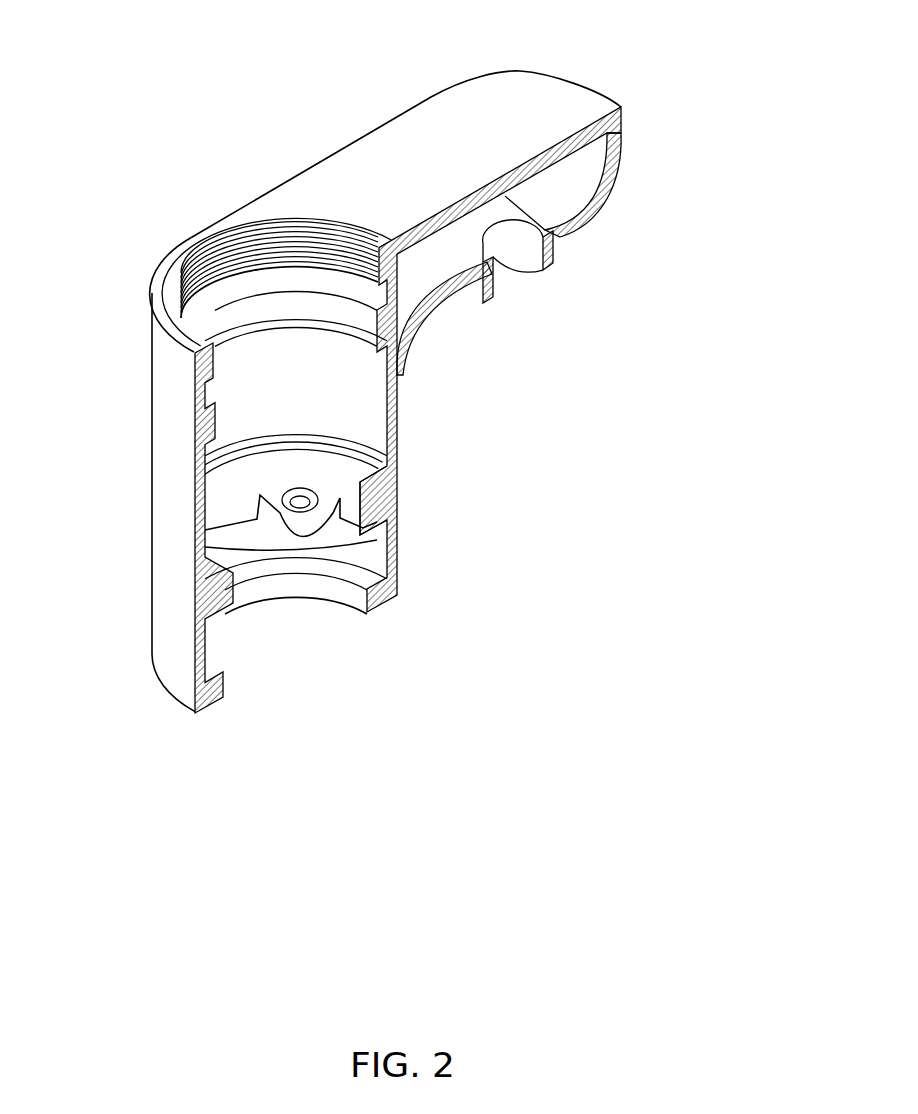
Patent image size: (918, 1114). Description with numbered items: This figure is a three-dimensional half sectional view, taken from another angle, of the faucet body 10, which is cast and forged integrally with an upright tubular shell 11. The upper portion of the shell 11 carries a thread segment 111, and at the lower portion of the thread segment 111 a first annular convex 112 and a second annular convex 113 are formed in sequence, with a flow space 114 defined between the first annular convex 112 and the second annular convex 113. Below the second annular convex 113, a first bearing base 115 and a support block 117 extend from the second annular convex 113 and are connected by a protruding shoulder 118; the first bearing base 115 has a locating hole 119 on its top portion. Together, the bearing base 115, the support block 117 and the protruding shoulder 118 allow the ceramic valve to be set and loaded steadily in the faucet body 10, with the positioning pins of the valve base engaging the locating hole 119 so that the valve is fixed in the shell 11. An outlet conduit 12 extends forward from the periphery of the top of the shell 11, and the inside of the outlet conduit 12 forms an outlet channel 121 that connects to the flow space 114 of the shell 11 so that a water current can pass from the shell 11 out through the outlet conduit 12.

The faucet body 10 is at (156, 686).
The upright tubular shell 11 is at (162, 366).
The outlet conduit 12 is at (543, 100).
The thread segment 111 is at (208, 267).
The first annular convex 112 is at (195, 408).
The second annular convex 113 is at (193, 566).
The flow space 114 is at (207, 495).
The first bearing base 115 is at (333, 518).
The support block 117 is at (232, 598).
The protruding shoulder 118 is at (252, 500).
The locating hole 119 is at (300, 497).
The outlet channel 121 is at (547, 197).